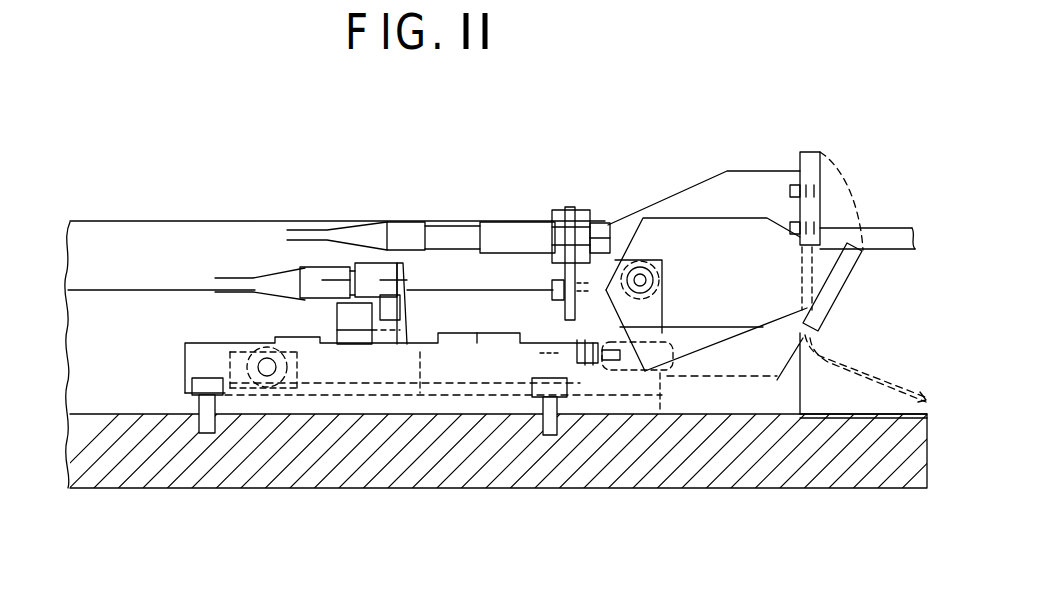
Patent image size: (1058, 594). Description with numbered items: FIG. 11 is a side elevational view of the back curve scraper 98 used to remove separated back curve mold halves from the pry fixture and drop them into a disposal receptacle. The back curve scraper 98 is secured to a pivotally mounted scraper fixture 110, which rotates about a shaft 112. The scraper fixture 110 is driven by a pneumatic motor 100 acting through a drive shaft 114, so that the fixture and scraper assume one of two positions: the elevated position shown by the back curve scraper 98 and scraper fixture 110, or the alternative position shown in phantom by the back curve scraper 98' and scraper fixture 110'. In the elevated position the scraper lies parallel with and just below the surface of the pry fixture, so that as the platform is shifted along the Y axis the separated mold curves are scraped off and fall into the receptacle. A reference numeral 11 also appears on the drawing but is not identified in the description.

The threaded rod nut 11 is at (552, 293).
The back curve scraper 98 is at (842, 162).
The back curve scraper (second position) 98' is at (865, 322).
The pneumatic motor 100 is at (407, 387).
The scraper fixture 110 is at (704, 163).
The scraper fixture (second position) 110' is at (709, 284).
The shaft 112 is at (640, 280).
The drive shaft 114 is at (578, 355).